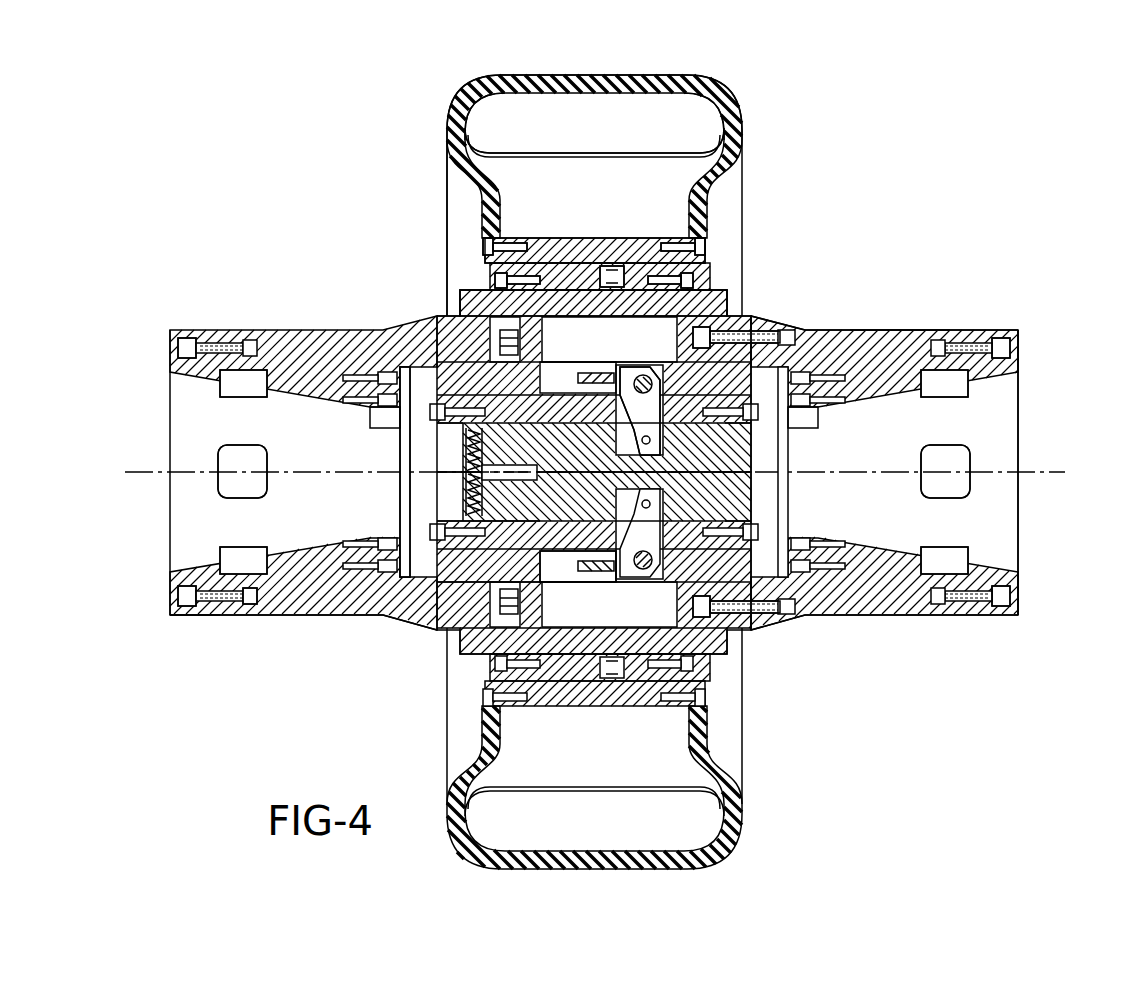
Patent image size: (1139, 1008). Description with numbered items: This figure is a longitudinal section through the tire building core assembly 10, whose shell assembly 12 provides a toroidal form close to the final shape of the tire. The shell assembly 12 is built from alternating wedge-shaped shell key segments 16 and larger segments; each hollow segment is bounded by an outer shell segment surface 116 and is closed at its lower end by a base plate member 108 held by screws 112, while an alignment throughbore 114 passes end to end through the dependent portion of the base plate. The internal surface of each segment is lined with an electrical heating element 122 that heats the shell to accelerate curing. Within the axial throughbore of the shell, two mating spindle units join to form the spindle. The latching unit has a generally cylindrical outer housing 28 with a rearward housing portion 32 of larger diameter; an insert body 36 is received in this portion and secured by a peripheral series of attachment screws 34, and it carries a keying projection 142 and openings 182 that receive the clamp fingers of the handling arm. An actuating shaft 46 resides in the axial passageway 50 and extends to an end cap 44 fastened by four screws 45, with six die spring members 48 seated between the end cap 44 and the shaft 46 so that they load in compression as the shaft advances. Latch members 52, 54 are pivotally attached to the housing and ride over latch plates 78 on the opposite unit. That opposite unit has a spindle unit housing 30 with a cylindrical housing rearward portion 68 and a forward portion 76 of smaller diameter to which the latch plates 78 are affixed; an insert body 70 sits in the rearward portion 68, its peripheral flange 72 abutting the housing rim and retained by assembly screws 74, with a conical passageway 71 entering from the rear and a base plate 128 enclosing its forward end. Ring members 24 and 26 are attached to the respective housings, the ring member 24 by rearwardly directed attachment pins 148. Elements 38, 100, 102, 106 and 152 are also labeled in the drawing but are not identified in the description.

The tire building core assembly 10 is at (322, 172).
The shell assembly 12 is at (471, 79).
The shell key segment 16 is at (697, 80).
The outer shell segment surface 116 is at (731, 105).
The electrical heating element 122 is at (596, 150).
The bellows cover 152 is at (476, 292).
The screws 112 is at (507, 243).
The base plate member 108 is at (562, 268).
The alignment throughbore 114 is at (637, 265).
The retaining bolt 100 is at (541, 246).
The seal 102 is at (598, 283).
The retaining bolt 106 is at (663, 283).
The latch member 52 is at (627, 363).
The ring member 26 is at (468, 300).
The ring member 24 is at (752, 338).
The attachment pins 148 is at (760, 325).
The outer housing 28 is at (863, 331).
The rearward housing portion 32 is at (898, 330).
The end flange 38 is at (995, 330).
The attachment screws 34 is at (1008, 350).
The spindle unit housing 30 is at (323, 331).
The openings 182 is at (238, 383).
The keying projection 142 is at (372, 420).
The end cap 44 is at (430, 445).
The actuating shaft 46 is at (737, 455).
The die spring members 48 is at (432, 502).
The axial passageway 50 is at (752, 490).
The base plate 128 is at (400, 490).
The conical passageway 71 is at (214, 519).
The insert body 36 is at (862, 554).
The latch member 54 is at (628, 575).
The latch plates 78 is at (585, 585).
The forward portion 76 is at (487, 570).
The screws 45 is at (500, 553).
The insert body 70 is at (320, 555).
The housing rearward portion 68 is at (267, 615).
The peripheral flange 72 is at (196, 615).
The assembly screws 74 is at (178, 346).